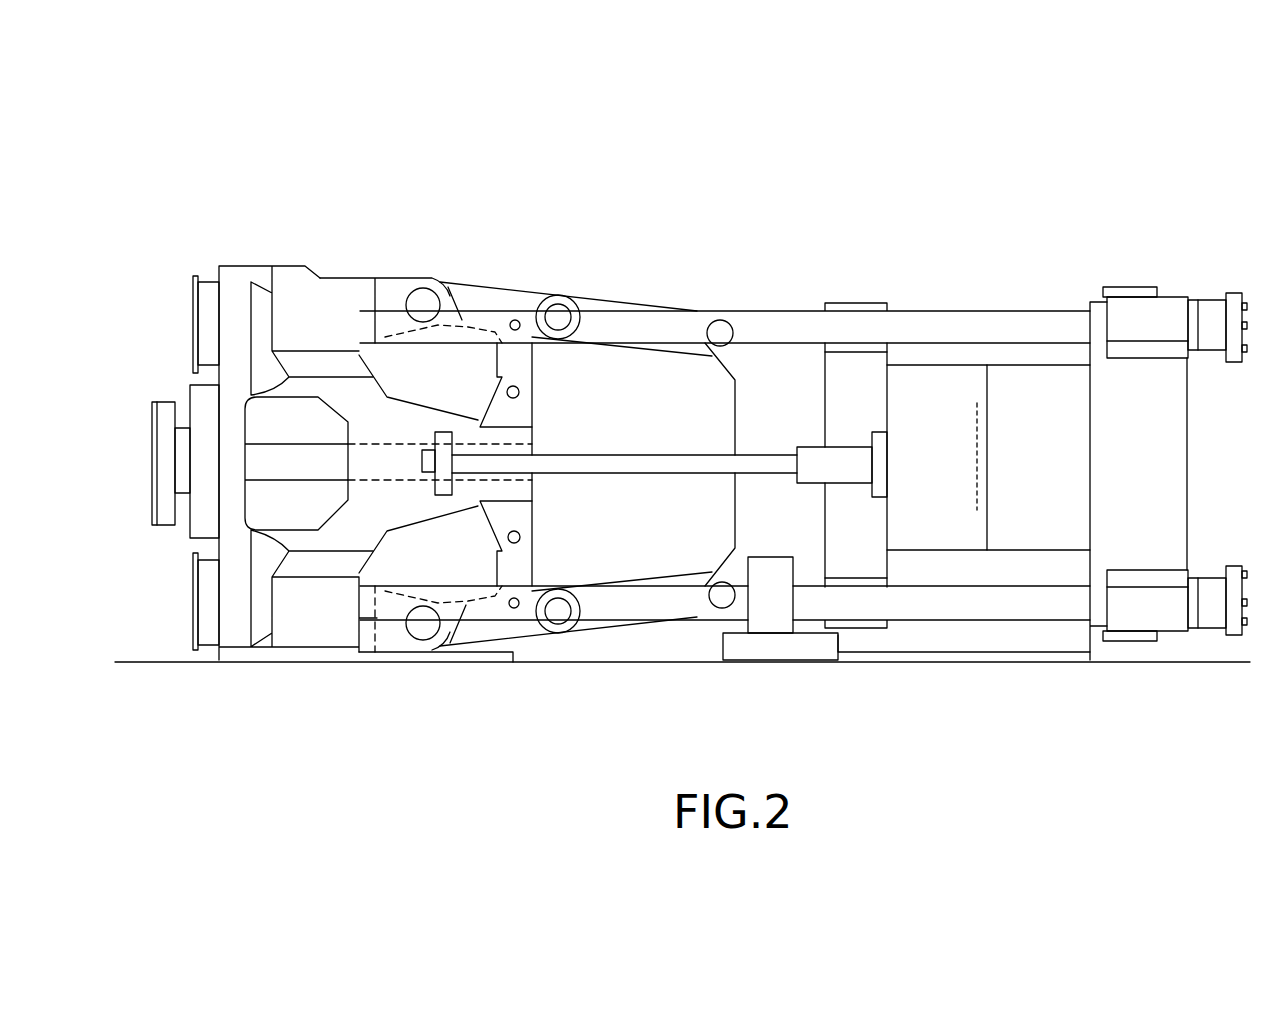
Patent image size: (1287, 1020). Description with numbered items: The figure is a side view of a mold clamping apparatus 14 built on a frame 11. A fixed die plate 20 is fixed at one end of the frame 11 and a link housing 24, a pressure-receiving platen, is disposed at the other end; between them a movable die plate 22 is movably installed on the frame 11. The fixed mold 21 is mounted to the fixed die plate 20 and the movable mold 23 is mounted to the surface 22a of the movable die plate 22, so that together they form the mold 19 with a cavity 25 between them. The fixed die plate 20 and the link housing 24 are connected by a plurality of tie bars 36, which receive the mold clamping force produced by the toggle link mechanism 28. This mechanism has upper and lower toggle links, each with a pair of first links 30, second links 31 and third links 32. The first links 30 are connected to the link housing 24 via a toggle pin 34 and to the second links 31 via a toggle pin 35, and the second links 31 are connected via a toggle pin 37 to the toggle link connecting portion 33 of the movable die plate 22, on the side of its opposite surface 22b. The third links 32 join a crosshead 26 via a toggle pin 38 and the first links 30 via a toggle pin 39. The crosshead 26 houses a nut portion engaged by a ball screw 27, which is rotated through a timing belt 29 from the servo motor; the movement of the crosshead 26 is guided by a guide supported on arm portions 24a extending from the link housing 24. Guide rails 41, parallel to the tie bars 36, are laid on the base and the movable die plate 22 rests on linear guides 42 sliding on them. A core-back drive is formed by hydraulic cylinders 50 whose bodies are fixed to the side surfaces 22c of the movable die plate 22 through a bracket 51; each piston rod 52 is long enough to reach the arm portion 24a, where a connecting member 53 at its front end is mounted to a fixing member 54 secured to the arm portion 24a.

The frame 11 is at (160, 660).
The mold clamping apparatus 14 is at (849, 175).
The mold 19 is at (1073, 252).
The fixed die plate 20 is at (1160, 463).
The fixed mold 21 is at (1057, 388).
The movable die plate 22 is at (857, 537).
The surface 22a is at (888, 503).
The opposite surface 22b is at (823, 397).
The side surfaces 22c is at (863, 557).
The movable mold 23 is at (953, 390).
The link housing 24 is at (240, 272).
The arm portions 24a is at (415, 500).
The cavity 25 is at (987, 450).
The crosshead 26 is at (518, 515).
The ball screw 27 is at (325, 460).
The toggle link mechanism 28 is at (547, 214).
The timing belt 29 is at (165, 410).
The first links 30 is at (473, 298).
The second links 31 is at (595, 303).
The third links 32 is at (507, 358).
The toggle link connecting portion 33 is at (788, 383).
The toggle pin 34 is at (420, 302).
The toggle pin 35 is at (557, 293).
The tie bars 36 is at (762, 327).
The toggle pin 37 is at (708, 323).
The toggle pin 38 is at (502, 392).
The toggle pin 39 is at (512, 315).
The guide rails 41 is at (1045, 663).
The linear guides 42 is at (780, 655).
The hydraulic cylinders 50 is at (847, 462).
The bracket 51 is at (880, 457).
The piston rods 52 is at (672, 465).
The connecting member 53 is at (420, 465).
The fixing member 54 is at (437, 438).